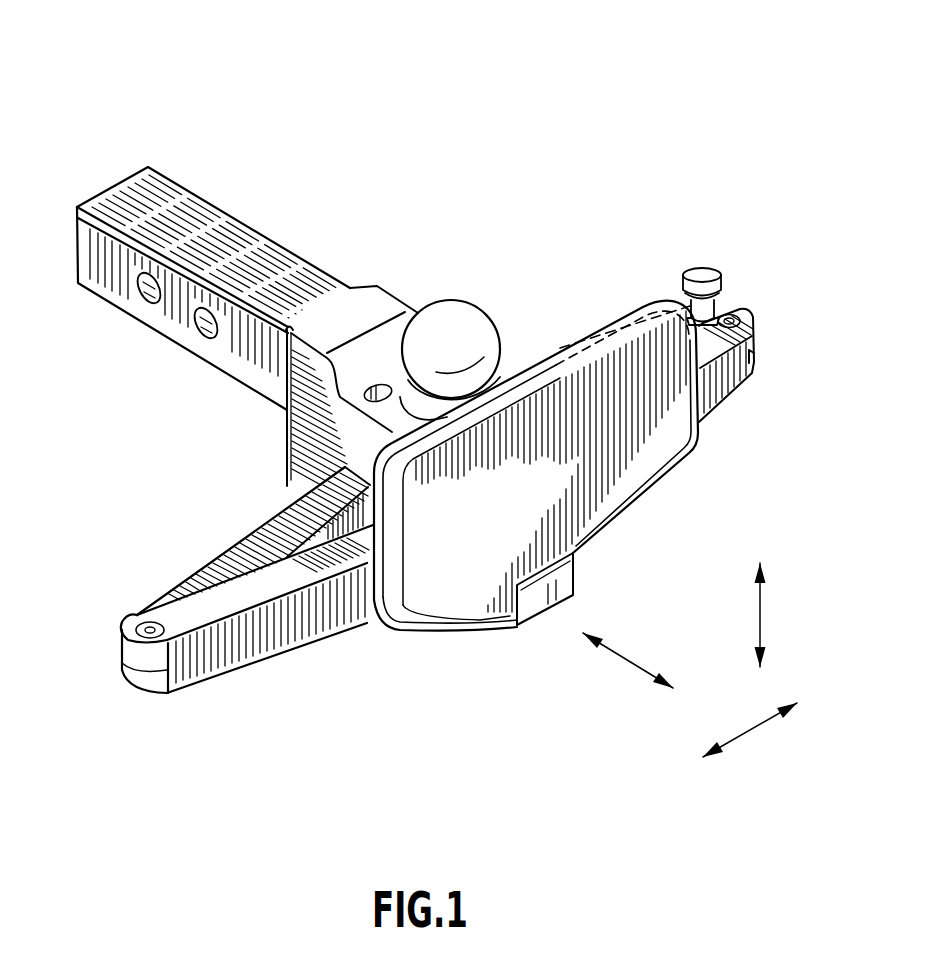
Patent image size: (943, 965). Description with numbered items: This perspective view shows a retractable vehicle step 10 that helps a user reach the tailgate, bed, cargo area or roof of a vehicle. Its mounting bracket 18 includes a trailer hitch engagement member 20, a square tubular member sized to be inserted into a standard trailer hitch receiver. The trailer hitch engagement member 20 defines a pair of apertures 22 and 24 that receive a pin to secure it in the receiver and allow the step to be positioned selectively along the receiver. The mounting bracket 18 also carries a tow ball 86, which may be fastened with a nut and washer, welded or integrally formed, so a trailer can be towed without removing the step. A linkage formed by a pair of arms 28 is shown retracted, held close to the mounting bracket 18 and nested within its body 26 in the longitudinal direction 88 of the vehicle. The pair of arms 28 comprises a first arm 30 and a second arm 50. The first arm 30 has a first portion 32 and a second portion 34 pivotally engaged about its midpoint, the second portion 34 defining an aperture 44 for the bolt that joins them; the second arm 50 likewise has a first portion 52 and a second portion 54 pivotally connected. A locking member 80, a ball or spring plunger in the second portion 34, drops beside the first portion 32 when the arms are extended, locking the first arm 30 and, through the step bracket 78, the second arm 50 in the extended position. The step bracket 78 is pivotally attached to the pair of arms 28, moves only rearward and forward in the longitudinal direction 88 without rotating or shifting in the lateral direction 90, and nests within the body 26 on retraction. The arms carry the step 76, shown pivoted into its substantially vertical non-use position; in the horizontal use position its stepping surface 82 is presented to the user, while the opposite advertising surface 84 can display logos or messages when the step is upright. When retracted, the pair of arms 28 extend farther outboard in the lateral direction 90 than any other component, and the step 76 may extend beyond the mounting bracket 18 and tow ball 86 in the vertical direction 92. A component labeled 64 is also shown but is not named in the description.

The retractable vehicle step 10 is at (422, 122).
The mounting bracket 18 is at (282, 270).
The trailer hitch engagement member 20 is at (107, 187).
The aperture 22 is at (140, 294).
The aperture 24 is at (203, 334).
The body 26 is at (270, 436).
The pair of arms 28 is at (385, 660).
The first arm 30 is at (755, 268).
The first portion 32 is at (523, 350).
The second portion 34 is at (713, 393).
The aperture 44 is at (750, 305).
The second arm 50 is at (167, 725).
The first portion 52 is at (227, 555).
The second portion 54 is at (240, 660).
The arm end boss 64 is at (137, 620).
The step 76 is at (667, 483).
The step bracket 78 is at (553, 590).
The locking member 80 is at (703, 270).
The stepping surface 82 is at (613, 297).
The advertising surface 84 is at (550, 505).
The tow ball 86 is at (452, 317).
The longitudinal direction 88 is at (630, 663).
The lateral direction 90 is at (747, 733).
The vertical direction 92 is at (760, 618).